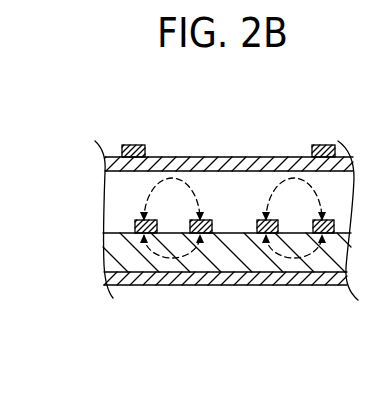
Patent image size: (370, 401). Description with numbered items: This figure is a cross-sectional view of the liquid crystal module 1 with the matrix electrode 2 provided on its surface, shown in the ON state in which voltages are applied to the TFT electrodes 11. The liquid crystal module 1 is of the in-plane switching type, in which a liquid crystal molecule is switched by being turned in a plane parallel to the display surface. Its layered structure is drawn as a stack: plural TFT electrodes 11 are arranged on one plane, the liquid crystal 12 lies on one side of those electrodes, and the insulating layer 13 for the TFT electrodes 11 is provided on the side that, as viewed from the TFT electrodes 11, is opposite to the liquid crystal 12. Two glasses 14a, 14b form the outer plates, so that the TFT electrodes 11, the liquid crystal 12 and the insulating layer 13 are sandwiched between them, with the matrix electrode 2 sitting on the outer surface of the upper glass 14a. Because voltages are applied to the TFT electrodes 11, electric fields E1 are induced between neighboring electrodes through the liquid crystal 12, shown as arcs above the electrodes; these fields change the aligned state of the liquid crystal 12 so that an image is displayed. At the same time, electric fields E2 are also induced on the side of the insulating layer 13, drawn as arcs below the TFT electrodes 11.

The liquid crystal module 1 is at (80, 174).
The matrix electrode 2 is at (133, 145).
The TFT electrodes 11 is at (135, 233).
The liquid crystal 12 is at (118, 211).
The insulating layer 13 is at (112, 262).
The glass 14a is at (224, 157).
The glass 14b is at (236, 286).
The electric fields E1 is at (177, 178).
The electric fields E2 is at (172, 259).